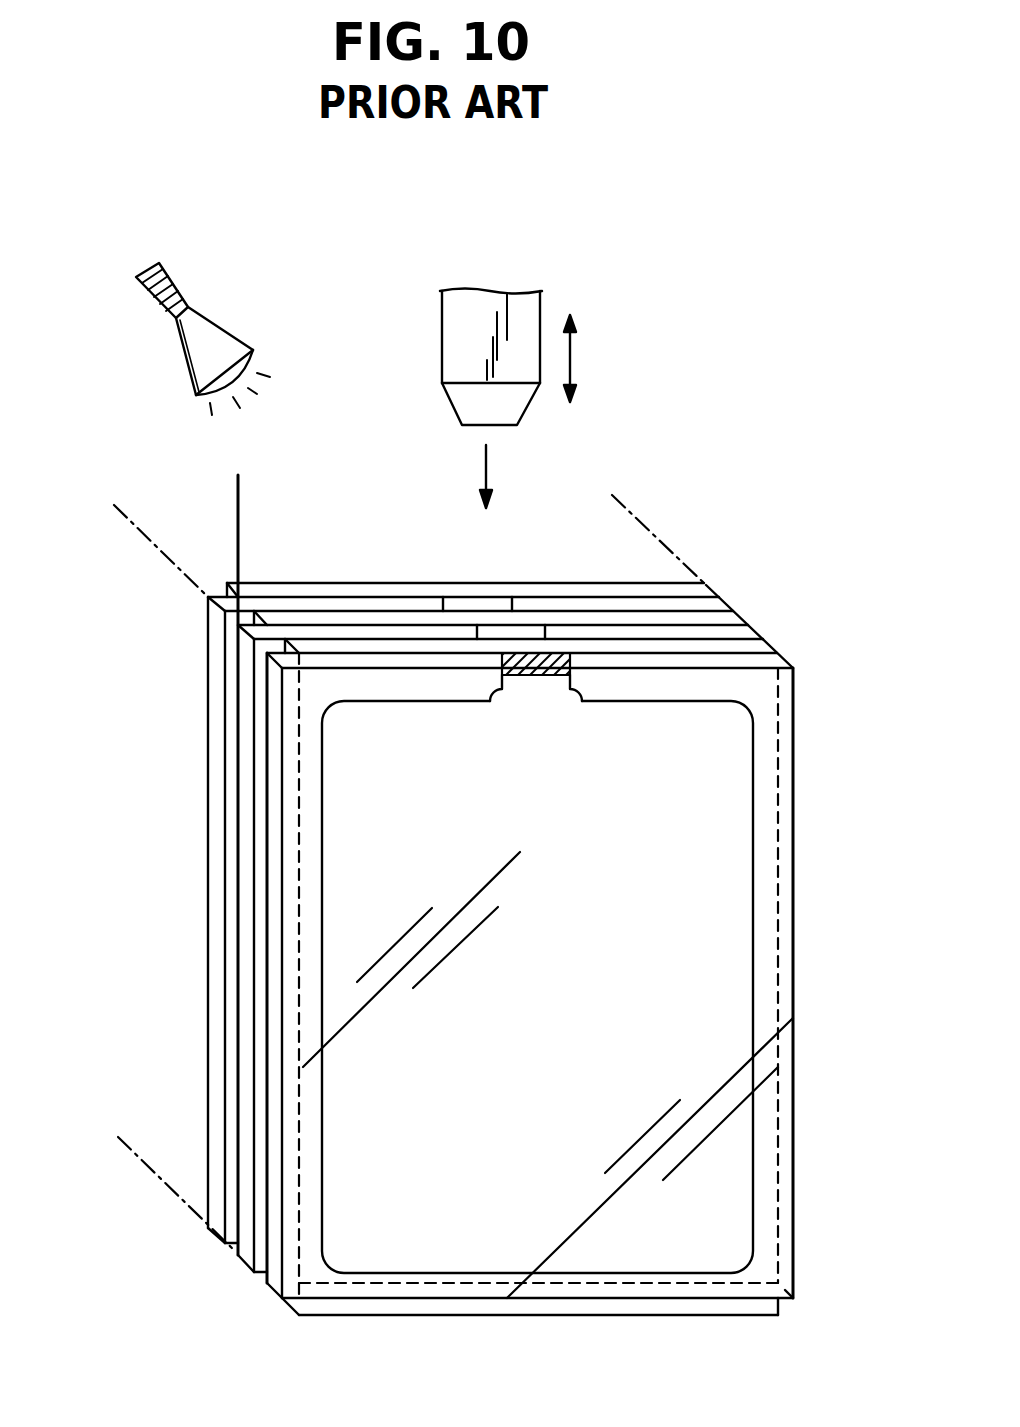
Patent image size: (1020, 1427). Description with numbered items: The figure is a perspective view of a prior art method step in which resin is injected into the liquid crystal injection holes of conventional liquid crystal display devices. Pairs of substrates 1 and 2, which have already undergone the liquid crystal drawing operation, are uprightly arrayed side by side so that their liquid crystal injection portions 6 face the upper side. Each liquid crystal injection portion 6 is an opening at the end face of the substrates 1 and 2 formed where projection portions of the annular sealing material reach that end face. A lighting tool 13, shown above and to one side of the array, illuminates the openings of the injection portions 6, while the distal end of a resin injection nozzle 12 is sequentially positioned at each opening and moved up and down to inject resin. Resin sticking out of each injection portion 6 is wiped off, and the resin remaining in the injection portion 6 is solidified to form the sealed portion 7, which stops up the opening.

The substrate 1 is at (220, 697).
The substrate 2 is at (706, 584).
The liquid crystal injection portion 6 is at (539, 695).
The sealed portion 7 is at (518, 677).
The resin injection nozzle 12 is at (465, 403).
The lighting tool 13 is at (217, 347).